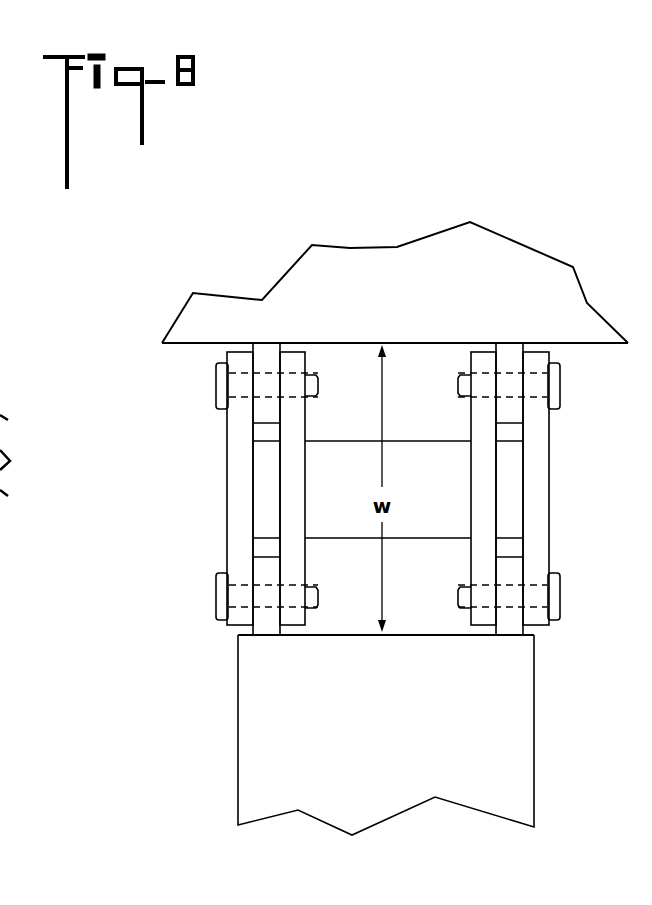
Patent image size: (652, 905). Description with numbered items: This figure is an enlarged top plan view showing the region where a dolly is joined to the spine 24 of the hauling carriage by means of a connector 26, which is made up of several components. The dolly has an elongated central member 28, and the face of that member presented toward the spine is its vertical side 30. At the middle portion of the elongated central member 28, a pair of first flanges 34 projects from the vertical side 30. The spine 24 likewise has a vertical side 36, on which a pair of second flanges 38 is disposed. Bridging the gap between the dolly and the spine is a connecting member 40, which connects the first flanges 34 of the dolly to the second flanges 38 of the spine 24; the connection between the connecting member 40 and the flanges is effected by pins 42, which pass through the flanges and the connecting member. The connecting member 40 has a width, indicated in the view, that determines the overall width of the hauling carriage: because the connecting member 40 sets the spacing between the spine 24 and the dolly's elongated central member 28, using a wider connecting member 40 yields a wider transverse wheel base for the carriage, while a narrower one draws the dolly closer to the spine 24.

The spine 24 is at (468, 718).
The connector 26 is at (174, 433).
The elongated central member 28 is at (462, 282).
The vertical side 30 is at (192, 348).
The first flanges 34 is at (267, 407).
The vertical side 36 is at (357, 636).
The second flanges 38 is at (263, 618).
The connecting member 40 is at (437, 477).
The pins 42 is at (267, 598).